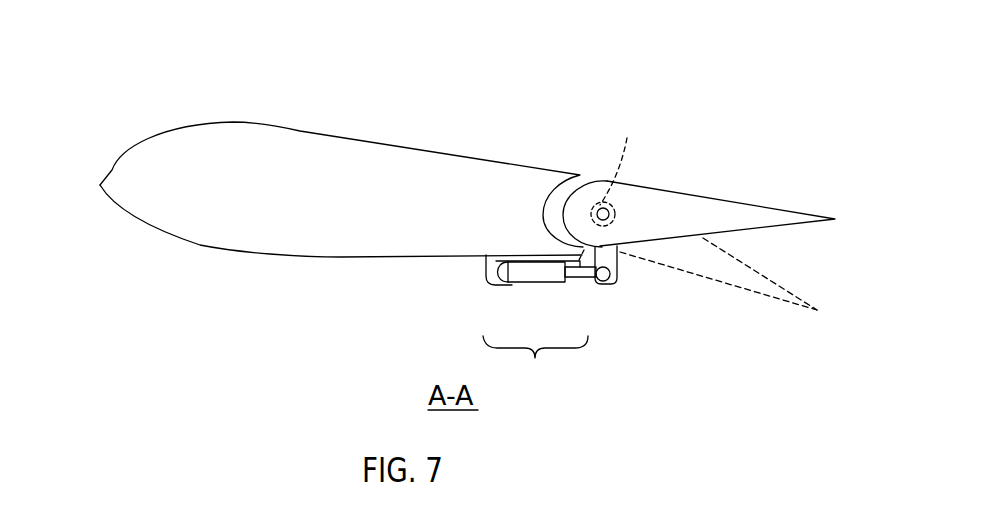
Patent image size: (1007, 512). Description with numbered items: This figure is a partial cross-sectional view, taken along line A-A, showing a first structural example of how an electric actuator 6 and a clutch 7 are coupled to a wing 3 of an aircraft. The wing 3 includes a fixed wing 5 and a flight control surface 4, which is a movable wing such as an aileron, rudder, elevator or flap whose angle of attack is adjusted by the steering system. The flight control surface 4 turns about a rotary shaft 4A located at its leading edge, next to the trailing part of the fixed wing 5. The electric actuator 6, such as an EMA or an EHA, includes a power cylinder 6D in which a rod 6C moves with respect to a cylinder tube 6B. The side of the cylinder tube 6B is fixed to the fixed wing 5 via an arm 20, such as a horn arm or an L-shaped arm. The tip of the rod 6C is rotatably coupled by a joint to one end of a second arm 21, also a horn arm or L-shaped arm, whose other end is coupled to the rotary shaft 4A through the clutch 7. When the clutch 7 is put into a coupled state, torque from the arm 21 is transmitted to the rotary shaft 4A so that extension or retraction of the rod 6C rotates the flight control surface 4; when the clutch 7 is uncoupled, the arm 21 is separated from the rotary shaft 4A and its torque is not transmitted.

The wing 3 is at (150, 108).
The fixed wing 5 is at (407, 146).
The flight control surface 4 is at (712, 197).
The rotary shaft 4A is at (605, 208).
The clutch 7 is at (617, 148).
The arm 20 is at (486, 268).
The arm 21 is at (613, 258).
The electric actuator 6 is at (510, 288).
The cylinder tube 6B is at (540, 277).
The rod 6C is at (581, 280).
The power cylinder 6D is at (535, 367).